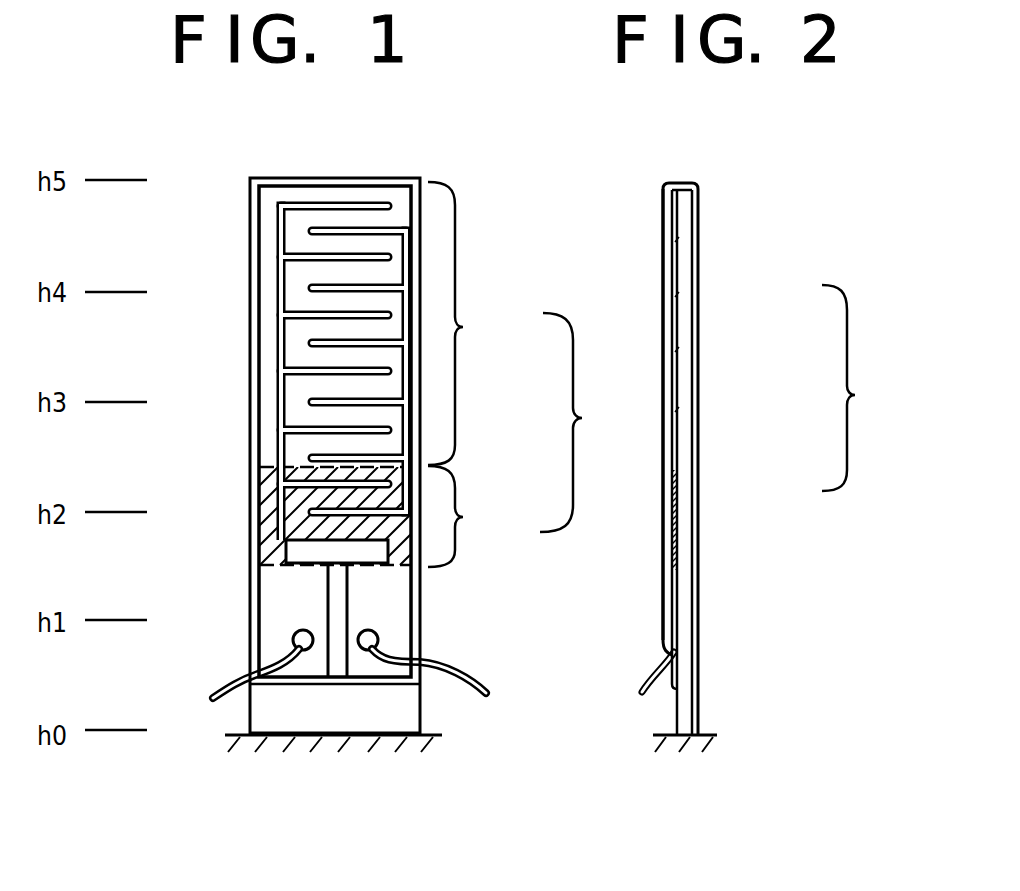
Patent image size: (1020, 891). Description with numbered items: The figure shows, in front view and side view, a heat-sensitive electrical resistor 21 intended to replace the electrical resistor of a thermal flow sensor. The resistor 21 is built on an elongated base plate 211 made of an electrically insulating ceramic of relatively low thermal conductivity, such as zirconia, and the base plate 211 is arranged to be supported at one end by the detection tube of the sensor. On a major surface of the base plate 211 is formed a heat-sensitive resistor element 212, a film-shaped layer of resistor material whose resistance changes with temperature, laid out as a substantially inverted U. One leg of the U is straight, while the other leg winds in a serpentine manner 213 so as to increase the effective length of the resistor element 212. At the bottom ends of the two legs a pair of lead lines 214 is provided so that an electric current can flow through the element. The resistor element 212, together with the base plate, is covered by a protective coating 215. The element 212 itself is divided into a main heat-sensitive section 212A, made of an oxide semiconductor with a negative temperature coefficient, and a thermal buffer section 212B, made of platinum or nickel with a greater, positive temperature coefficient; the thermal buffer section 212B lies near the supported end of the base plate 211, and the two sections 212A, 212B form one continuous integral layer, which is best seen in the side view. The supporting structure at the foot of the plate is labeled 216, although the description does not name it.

In FIG. 1, the heat-sensitive electrical resistor 21 is at (471, 201).
In FIG. 1, the base plate 211 is at (318, 178).
In FIG. 2, the base plate 211 is at (700, 210).
In FIG. 1, the heat-sensitive resistor element 212 is at (589, 422).
In FIG. 2, the heat-sensitive resistor element 212 is at (792, 462).
In FIG. 1, the main heat-sensitive section 212A is at (404, 323).
In FIG. 2, the main heat-sensitive section 212A is at (677, 325).
In FIG. 1, the thermal buffer section 212B is at (353, 516).
In FIG. 2, the thermal buffer section 212B is at (680, 497).
In FIG. 1, the serpentine manner 213 is at (298, 377).
In FIG. 1, the lead lines 214 is at (236, 680).
In FIG. 2, the lead lines 214 is at (643, 670).
In FIG. 1, the protective coating 215 is at (423, 707).
In FIG. 2, the protective coating 215 is at (660, 212).
In FIG. 1, the base 216 is at (322, 752).
In FIG. 2, the base 216 is at (708, 733).